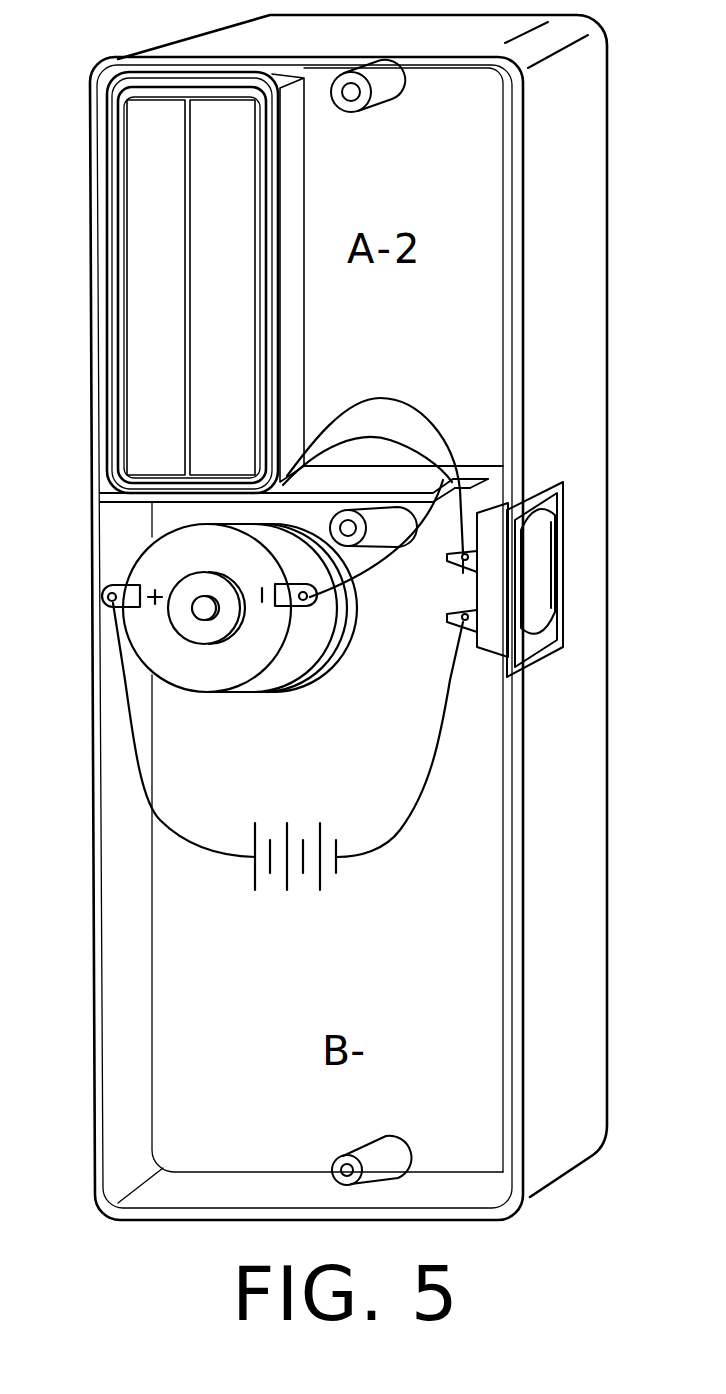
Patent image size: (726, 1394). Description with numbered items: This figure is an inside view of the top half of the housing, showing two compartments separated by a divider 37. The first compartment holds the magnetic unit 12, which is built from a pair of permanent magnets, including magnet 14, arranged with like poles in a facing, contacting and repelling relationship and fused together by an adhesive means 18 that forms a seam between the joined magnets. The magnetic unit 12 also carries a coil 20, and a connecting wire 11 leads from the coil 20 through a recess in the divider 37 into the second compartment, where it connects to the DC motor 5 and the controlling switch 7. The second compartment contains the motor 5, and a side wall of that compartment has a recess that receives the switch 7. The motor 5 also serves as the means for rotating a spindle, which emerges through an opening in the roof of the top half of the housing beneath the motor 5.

The DC motor 5 is at (214, 716).
The controlling switch 7 is at (548, 465).
The connecting wire 11 is at (442, 545).
The magnetic unit 12 is at (172, 203).
The permanent magnet 14 is at (245, 203).
The adhesive means 18 is at (164, 431).
The coil 20 is at (288, 195).
The divider 37 is at (486, 462).